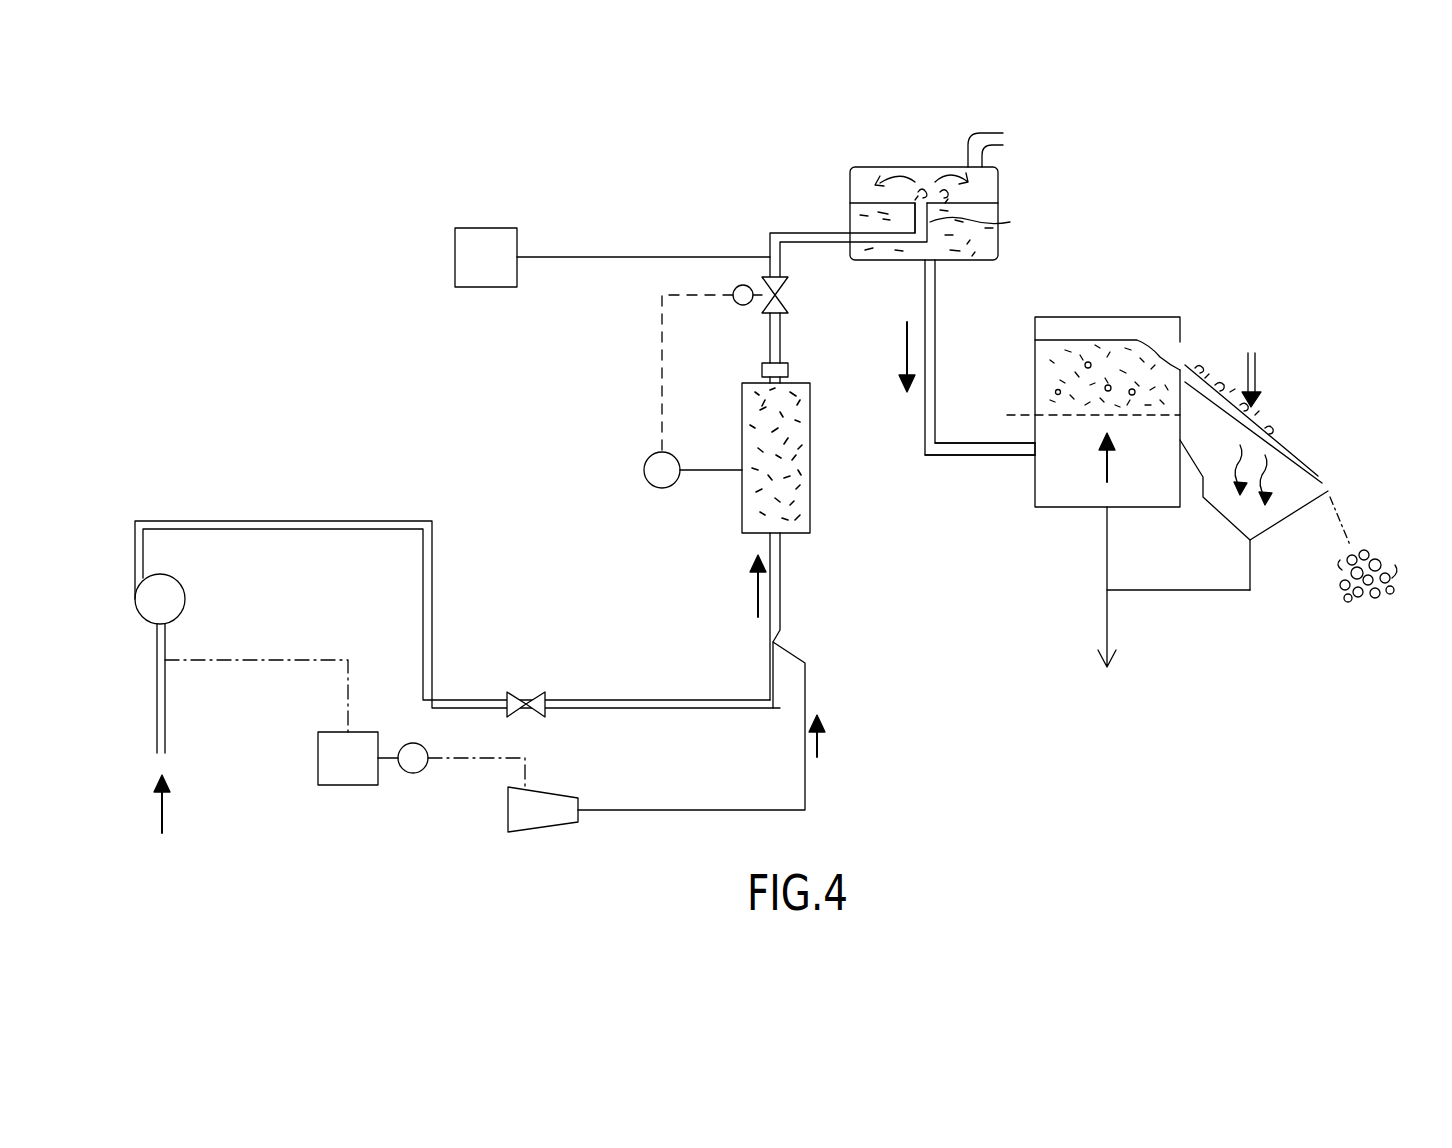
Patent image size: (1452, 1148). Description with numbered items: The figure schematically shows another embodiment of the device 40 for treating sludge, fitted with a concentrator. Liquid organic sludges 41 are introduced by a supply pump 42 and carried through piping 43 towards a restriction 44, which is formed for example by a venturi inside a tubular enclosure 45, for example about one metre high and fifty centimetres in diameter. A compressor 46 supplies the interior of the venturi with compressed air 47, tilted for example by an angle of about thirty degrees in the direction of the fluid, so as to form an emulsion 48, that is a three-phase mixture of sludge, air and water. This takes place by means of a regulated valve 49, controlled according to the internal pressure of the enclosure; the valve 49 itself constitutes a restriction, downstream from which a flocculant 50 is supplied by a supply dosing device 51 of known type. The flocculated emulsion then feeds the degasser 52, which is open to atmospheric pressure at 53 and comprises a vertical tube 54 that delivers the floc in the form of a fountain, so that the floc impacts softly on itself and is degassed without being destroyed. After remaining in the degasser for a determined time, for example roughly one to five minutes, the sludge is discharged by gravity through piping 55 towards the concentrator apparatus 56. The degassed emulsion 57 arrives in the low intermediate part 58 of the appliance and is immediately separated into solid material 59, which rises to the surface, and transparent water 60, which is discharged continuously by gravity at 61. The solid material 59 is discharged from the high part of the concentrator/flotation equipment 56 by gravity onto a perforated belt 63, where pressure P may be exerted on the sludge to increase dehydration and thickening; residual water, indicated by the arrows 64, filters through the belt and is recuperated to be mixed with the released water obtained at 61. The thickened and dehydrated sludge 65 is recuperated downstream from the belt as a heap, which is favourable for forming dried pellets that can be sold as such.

The device 40 is at (630, 238).
The liquid organic sludges 41 is at (165, 806).
The supply pump 42 is at (175, 600).
The piping 43 is at (433, 605).
The restriction 44 is at (762, 635).
The tubular enclosure 45 is at (810, 494).
The compressor 46 is at (540, 812).
The compressed air 47 is at (820, 740).
The emulsion 48 is at (782, 572).
The regulated valve 49 is at (740, 305).
The flocculant 50 is at (690, 252).
The supply dosing device 51 is at (808, 232).
The degasser 52 is at (1012, 192).
The opening to atmospheric pressure 53 is at (972, 145).
The vertical tube 54 is at (987, 219).
The piping 55 is at (937, 297).
The concentrator apparatus 56 is at (1193, 333).
The degassed emulsion 57 is at (948, 457).
The low intermediate part 58 is at (1027, 462).
The solid material 59 is at (1045, 375).
The transparent water 60 is at (1075, 490).
The water discharge 61 is at (1107, 540).
The perforated belt 63 is at (1290, 455).
The residual water arrows 64 is at (1328, 491).
The thickened and dehydrated sludge 65 is at (1395, 563).